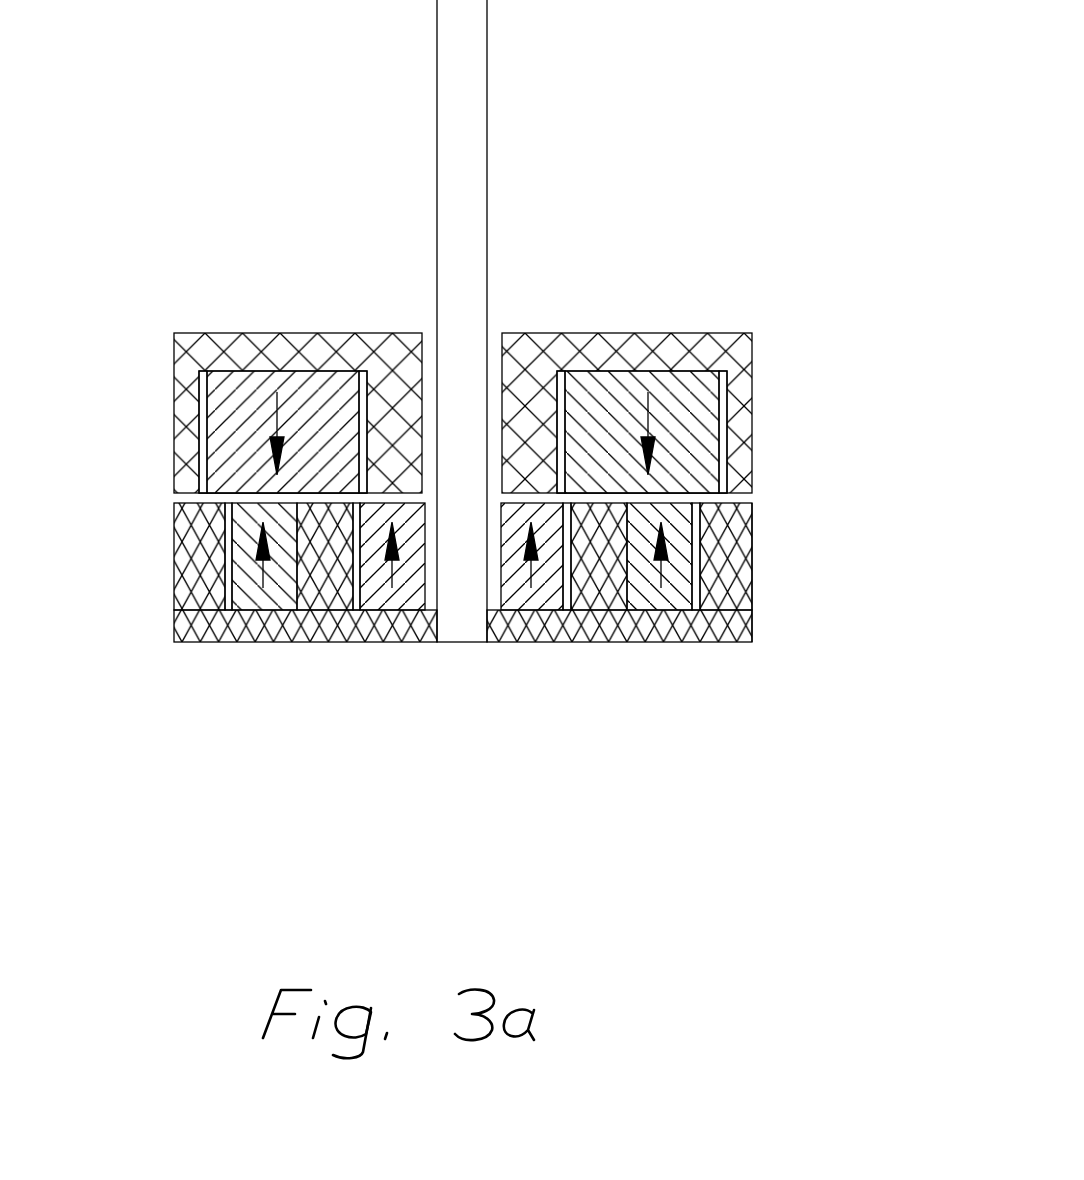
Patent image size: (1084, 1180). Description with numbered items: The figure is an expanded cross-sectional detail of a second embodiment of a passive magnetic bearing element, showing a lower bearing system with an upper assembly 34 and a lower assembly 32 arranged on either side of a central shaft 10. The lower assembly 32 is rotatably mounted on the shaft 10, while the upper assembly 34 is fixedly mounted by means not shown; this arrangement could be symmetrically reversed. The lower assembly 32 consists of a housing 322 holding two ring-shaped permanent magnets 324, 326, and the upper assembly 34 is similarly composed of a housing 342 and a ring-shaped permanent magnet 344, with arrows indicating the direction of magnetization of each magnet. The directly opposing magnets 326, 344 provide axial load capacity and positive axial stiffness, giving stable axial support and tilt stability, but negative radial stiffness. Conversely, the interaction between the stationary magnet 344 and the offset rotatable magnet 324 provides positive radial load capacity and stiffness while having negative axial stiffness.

The shaft 10 is at (575, 321).
The upper assembly 34 is at (492, 359).
The ring-shaped permanent magnet 344 is at (210, 360).
The housing 342 is at (627, 359).
The lower assembly 32 is at (489, 665).
The ring-shaped permanent magnet 326 is at (173, 637).
The ring-shaped permanent magnet 324 is at (297, 665).
The housing 322 is at (700, 707).